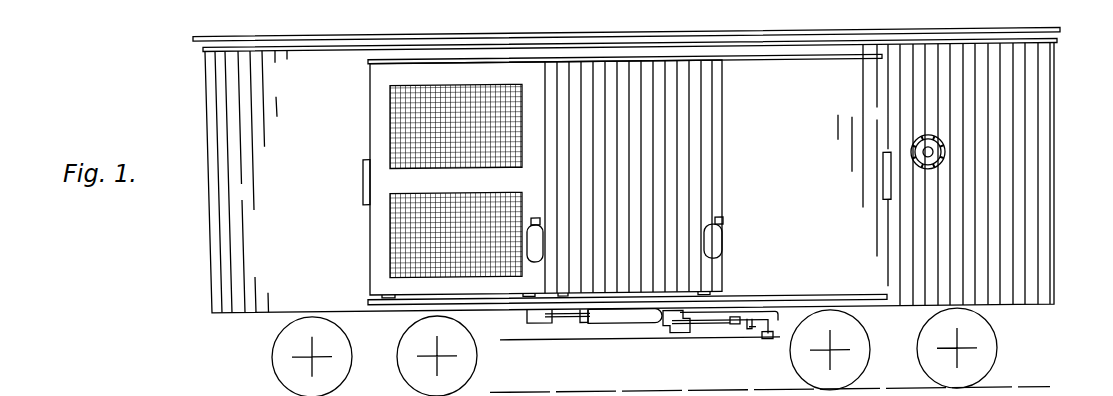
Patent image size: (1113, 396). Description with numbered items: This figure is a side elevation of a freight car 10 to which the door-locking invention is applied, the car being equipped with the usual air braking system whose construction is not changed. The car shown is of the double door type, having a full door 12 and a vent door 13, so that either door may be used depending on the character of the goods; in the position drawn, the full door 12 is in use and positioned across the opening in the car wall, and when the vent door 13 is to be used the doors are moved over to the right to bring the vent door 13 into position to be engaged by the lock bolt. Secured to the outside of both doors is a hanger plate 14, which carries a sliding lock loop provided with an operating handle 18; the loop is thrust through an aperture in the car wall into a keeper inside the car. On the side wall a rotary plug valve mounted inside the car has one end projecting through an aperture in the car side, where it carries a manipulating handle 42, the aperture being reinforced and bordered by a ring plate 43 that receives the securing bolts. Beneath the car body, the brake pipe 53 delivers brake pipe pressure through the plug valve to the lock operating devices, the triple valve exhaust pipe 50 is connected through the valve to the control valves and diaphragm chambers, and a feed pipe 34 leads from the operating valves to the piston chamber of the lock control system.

The car 10 is at (1040, 114).
The full door 12 is at (720, 149).
The vent door 13 is at (383, 120).
The hanger plate 14 is at (545, 245).
The operating handle 18 is at (542, 226).
The manipulating handle 42 is at (930, 153).
The ring plate 43 is at (925, 168).
The triple valve exhaust pipe 50 is at (718, 312).
The brake pipe 53 is at (742, 312).
The feed pipe 34 is at (912, 390).